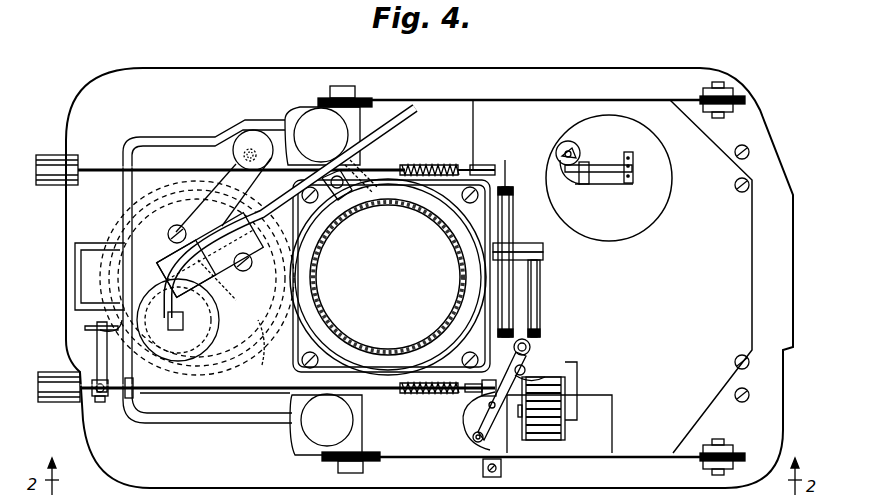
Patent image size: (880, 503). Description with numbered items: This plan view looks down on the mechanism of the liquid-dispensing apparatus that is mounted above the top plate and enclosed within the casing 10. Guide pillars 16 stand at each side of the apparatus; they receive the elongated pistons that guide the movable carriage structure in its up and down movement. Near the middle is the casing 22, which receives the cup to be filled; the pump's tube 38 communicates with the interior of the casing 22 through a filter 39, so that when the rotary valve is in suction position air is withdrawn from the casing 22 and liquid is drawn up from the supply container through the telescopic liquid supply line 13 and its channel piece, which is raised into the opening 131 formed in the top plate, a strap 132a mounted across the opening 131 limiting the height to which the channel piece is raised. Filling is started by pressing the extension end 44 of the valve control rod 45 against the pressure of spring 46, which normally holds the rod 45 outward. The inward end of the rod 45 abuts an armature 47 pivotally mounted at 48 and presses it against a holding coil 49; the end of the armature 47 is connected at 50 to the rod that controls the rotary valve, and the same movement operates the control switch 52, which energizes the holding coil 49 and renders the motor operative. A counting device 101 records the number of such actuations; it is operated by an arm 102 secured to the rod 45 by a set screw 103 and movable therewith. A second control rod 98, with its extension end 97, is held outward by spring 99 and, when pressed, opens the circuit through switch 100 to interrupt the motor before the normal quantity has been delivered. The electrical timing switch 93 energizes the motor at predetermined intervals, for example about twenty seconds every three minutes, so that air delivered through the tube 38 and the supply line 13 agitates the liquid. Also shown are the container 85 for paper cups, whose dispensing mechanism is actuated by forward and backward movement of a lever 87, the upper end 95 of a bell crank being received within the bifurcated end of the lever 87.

The casing 10 is at (252, 100).
The liquid supply line 13 is at (245, 133).
The guide pillars 16 is at (315, 125).
The casing 22 is at (262, 365).
The tube 38 is at (172, 262).
The filter 39 is at (220, 332).
The extension end 44 is at (60, 397).
The valve control rod 45 is at (197, 385).
The spring 46 is at (437, 395).
The armature 47 is at (522, 352).
The pivot 48 is at (525, 368).
The holding coil 49 is at (555, 427).
The connection 50 is at (472, 438).
The control switch 52 is at (548, 290).
The container 85 is at (315, 236).
The lever 87 is at (350, 180).
The electrical timing switch 93 is at (640, 222).
The upper end of bell crank 95 is at (338, 200).
The extension end 97 is at (50, 160).
The control rod 98 is at (97, 168).
The spring 99 is at (436, 165).
The switch 100 is at (524, 196).
The counting device 101 is at (95, 245).
The arm 102 is at (95, 350).
The set screw 103 is at (98, 400).
The opening 131 is at (252, 215).
The strap 132a is at (236, 278).